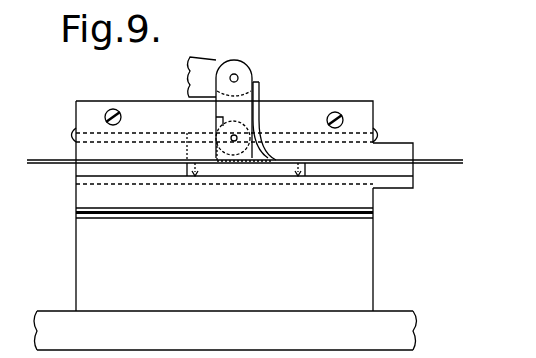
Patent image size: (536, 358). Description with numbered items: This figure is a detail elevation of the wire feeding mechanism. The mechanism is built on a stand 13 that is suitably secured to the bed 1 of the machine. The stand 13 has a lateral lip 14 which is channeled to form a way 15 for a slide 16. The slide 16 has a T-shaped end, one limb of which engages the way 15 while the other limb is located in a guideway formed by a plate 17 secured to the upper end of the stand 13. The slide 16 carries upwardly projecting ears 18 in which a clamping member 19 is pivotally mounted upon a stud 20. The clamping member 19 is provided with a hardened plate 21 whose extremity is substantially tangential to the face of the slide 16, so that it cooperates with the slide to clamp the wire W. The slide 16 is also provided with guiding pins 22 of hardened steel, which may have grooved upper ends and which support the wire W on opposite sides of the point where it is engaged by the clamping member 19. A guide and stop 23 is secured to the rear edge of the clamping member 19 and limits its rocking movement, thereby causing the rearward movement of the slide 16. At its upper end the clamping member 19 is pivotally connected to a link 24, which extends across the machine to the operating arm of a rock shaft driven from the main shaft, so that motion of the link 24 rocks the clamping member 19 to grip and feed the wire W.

The bed 1 is at (405, 322).
The stand 13 is at (358, 284).
The lateral lip 14 is at (374, 204).
The way 15 is at (107, 184).
The slide 16 is at (407, 170).
The plate 17 is at (363, 112).
The ears 18 is at (237, 128).
The clamping member 19 is at (242, 102).
The stud 20 is at (237, 137).
The hardened plate 21 is at (218, 152).
The guiding pins 22 is at (195, 178).
The guide and stop 23 is at (272, 158).
The link 24 is at (207, 67).
The workpiece W is at (442, 163).